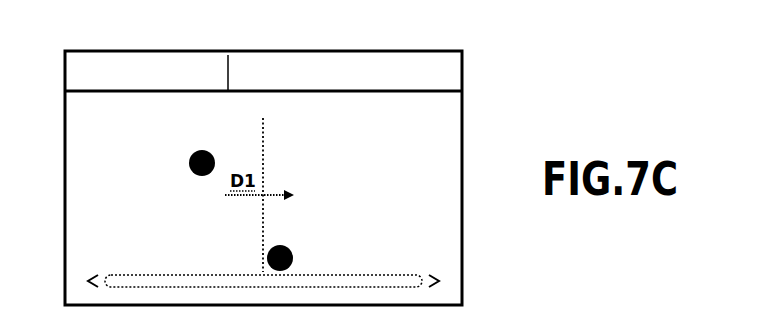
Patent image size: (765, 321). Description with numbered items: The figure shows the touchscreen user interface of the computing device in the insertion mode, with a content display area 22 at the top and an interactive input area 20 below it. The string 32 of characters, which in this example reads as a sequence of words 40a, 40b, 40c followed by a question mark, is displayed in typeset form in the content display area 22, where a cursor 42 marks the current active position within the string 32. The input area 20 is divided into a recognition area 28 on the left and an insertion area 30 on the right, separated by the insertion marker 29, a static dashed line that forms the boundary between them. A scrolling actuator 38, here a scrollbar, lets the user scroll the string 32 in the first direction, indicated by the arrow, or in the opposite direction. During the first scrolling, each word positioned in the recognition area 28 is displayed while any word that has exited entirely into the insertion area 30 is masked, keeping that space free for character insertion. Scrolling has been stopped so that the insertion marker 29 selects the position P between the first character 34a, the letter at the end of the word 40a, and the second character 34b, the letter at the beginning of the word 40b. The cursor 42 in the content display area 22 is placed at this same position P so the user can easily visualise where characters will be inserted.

The input area 20 is at (462, 259).
The content display area 22 is at (462, 67).
The recognition area 28 is at (112, 176).
The insertion marker 29 is at (266, 138).
The insertion area 30 is at (436, 176).
The string of characters 32 is at (122, 62).
The first character 34a is at (212, 92).
The second character 34b is at (238, 92).
The scrolling actuator 38 is at (390, 277).
The word 40a is at (190, 62).
The word 40b is at (262, 62).
The word 40c is at (316, 60).
The cursor 42 is at (231, 56).
The position P is at (322, 232).